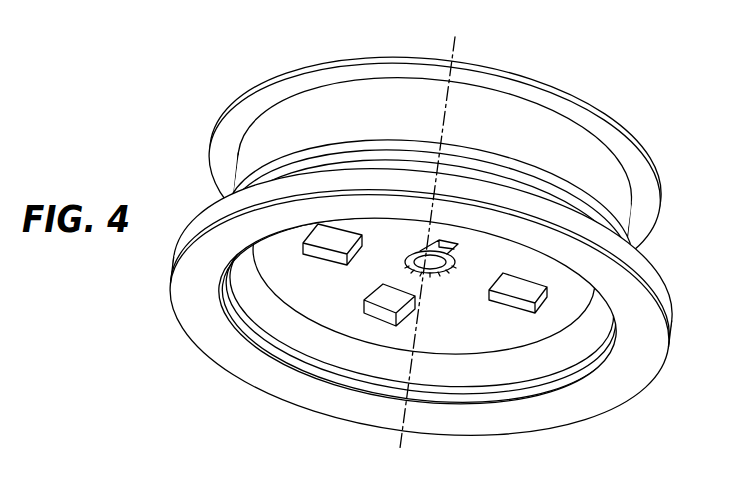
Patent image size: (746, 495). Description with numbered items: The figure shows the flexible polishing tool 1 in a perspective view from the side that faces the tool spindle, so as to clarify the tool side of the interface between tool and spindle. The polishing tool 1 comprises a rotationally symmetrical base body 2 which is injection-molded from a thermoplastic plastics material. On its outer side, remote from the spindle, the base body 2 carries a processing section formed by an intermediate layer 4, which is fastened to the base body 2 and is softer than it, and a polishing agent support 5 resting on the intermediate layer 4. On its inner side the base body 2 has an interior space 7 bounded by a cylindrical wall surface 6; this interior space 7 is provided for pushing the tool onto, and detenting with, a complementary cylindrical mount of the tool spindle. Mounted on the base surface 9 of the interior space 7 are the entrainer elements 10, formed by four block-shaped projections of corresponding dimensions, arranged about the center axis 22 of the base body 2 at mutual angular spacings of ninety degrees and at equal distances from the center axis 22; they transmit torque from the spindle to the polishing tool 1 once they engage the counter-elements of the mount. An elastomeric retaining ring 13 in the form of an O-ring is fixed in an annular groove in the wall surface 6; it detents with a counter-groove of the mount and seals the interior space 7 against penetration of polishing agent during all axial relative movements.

The polishing tool 1 is at (165, 330).
The base body 2 is at (267, 380).
The intermediate layer 4 is at (563, 128).
The polishing agent support 5 is at (513, 78).
The cylindrical wall surface 6 is at (307, 340).
The interior space 7 is at (577, 295).
The base surface 9 is at (479, 343).
The entrainer elements 10 is at (378, 300).
The retaining ring 13 is at (553, 382).
The center axis 22 is at (400, 448).